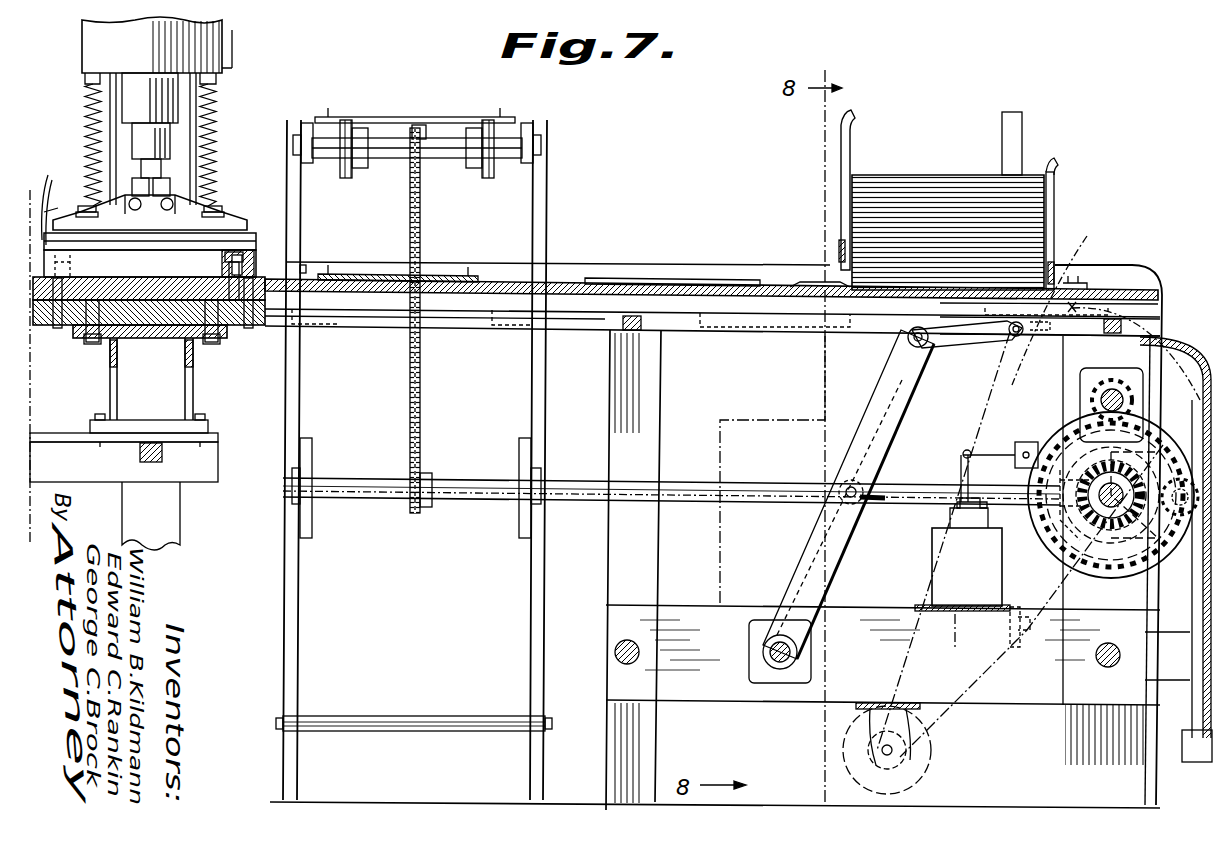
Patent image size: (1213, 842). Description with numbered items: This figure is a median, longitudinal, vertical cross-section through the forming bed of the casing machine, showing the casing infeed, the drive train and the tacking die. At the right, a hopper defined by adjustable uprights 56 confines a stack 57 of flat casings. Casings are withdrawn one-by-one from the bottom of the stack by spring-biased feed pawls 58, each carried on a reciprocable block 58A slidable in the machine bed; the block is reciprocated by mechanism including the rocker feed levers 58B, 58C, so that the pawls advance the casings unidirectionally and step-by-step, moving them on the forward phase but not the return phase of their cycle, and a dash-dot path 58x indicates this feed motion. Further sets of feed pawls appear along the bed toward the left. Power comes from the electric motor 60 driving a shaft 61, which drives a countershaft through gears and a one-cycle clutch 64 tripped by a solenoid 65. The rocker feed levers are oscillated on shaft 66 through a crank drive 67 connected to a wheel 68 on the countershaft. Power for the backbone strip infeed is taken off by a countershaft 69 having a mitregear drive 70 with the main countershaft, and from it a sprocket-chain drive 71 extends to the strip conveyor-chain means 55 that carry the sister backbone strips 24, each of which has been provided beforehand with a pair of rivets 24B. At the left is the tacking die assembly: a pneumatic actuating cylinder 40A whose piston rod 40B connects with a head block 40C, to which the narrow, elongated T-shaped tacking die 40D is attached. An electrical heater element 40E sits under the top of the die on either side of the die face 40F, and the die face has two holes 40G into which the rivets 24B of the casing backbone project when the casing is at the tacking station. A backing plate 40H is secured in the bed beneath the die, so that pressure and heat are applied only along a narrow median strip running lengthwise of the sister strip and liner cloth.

The backbone strip 24 is at (475, 93).
The rivets 24B is at (272, 272).
The pneumatic actuating cylinder 40A is at (205, 50).
The piston rod 40B is at (160, 172).
The head block 40C is at (168, 231).
The tacking die 40D is at (170, 275).
The electrical heater element 40E is at (40, 205).
The die face 40F is at (245, 245).
The holes 40G is at (240, 262).
The backing plate 40H is at (240, 330).
The strip conveyor-chain means 55 is at (346, 178).
The adjustable uprights 56 is at (855, 128).
The stack 57 is at (948, 160).
The feed pawls 58 is at (712, 306).
The reciprocable block 58A is at (1080, 336).
The lever 58B is at (960, 342).
The lever 58C is at (880, 433).
The feed stroke path 58x is at (1106, 305).
The electric motor 60 is at (845, 748).
The shaft 61 is at (1122, 396).
The one-cycle clutch 64 is at (1150, 455).
The solenoid 65 is at (988, 583).
The shaft 66 is at (775, 660).
The crank drive 67 is at (857, 503).
The wheel 68 is at (1035, 440).
The countershaft 69 is at (790, 480).
The mitregear drive 70 is at (1056, 556).
The sprocket-chain drive 71 is at (422, 430).